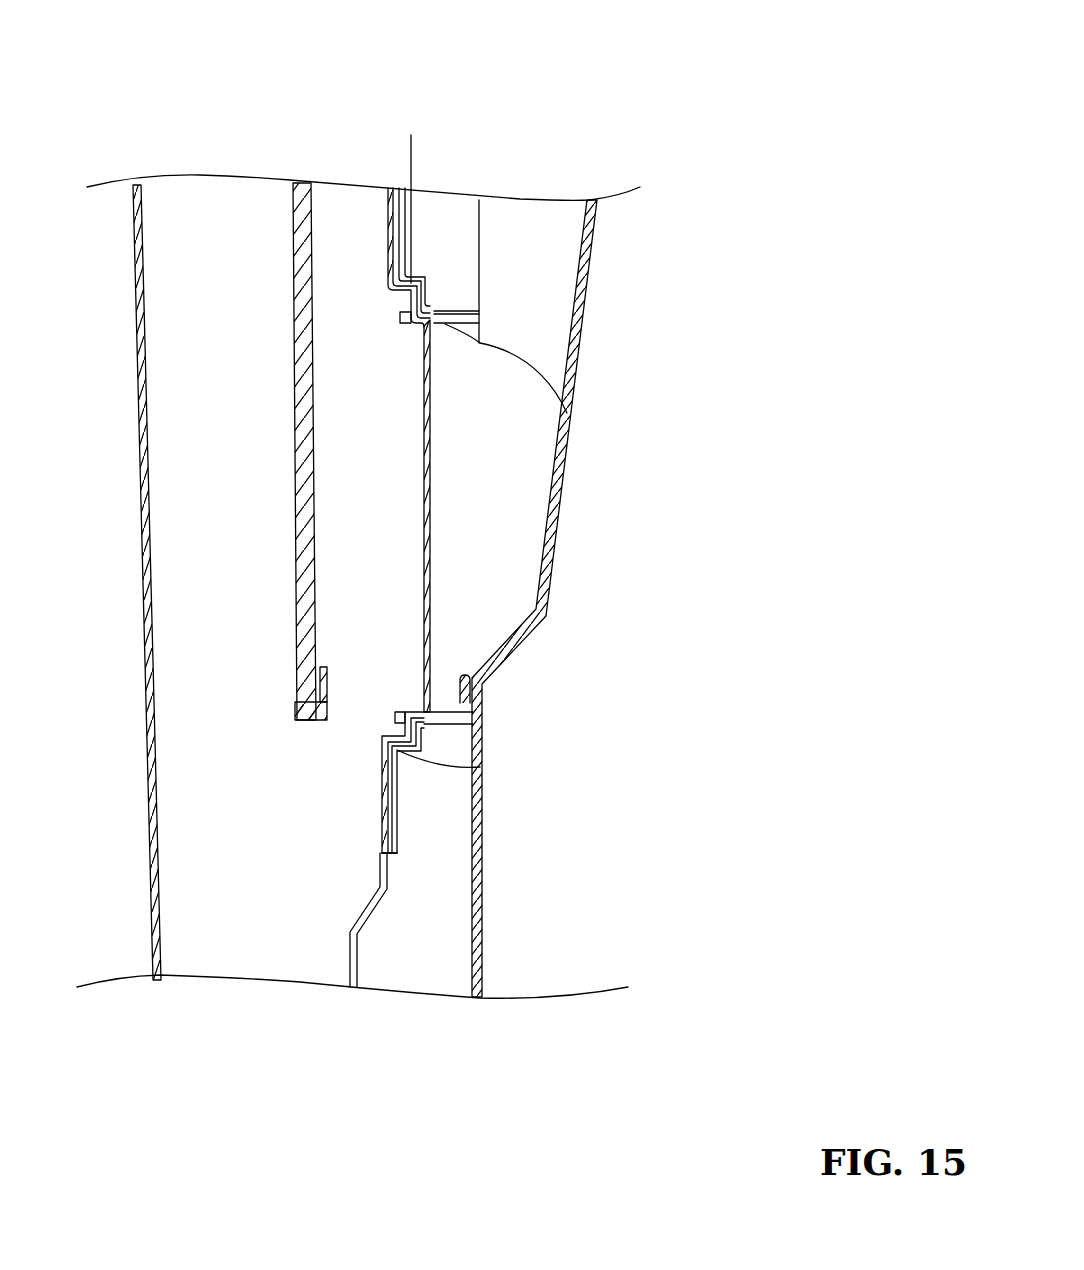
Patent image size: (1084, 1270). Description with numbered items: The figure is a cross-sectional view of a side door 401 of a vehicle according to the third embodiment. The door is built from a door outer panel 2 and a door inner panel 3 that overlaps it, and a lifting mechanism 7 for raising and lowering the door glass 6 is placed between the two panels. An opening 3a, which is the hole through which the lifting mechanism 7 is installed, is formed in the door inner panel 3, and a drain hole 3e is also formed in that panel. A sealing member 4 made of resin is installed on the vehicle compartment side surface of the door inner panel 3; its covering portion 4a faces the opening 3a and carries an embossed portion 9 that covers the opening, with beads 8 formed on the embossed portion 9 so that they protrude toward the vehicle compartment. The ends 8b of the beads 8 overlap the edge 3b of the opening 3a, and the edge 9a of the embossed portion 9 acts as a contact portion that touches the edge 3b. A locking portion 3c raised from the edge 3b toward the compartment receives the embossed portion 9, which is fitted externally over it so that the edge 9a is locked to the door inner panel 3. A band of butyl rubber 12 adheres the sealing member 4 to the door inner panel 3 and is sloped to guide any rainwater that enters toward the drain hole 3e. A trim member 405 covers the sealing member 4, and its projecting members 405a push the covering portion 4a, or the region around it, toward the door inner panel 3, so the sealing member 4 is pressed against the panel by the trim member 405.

The side door 401 is at (698, 88).
The door outer panel 2 is at (133, 222).
The door inner panel 3 is at (347, 947).
The opening 3a is at (400, 318).
The edge of the opening 3b is at (390, 296).
The locking portion 3c is at (427, 322).
The drain hole 3e is at (378, 823).
The sealing member 4 is at (398, 805).
The covering portion 4a is at (424, 402).
The door glass 6 is at (293, 466).
The lifting mechanism 7 is at (295, 706).
The beads 8 is at (420, 535).
The ends of the beads 8b is at (432, 298).
The embossed portion 9 is at (432, 303).
The edge of the embossed portion 9a is at (525, 780).
The butyl rubber 12 is at (388, 862).
The trim member 405 is at (557, 527).
The projecting members 405a is at (493, 345).